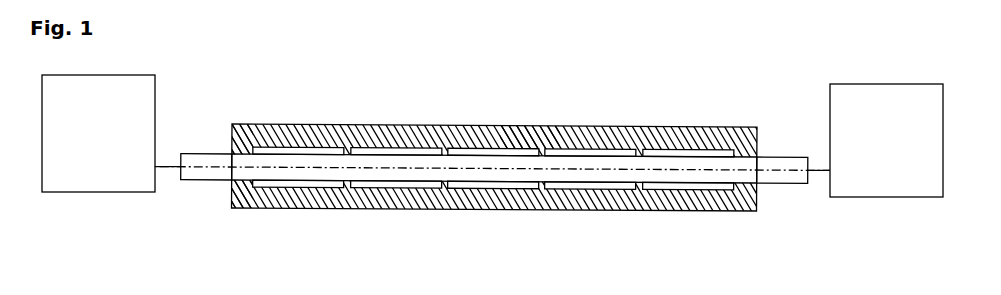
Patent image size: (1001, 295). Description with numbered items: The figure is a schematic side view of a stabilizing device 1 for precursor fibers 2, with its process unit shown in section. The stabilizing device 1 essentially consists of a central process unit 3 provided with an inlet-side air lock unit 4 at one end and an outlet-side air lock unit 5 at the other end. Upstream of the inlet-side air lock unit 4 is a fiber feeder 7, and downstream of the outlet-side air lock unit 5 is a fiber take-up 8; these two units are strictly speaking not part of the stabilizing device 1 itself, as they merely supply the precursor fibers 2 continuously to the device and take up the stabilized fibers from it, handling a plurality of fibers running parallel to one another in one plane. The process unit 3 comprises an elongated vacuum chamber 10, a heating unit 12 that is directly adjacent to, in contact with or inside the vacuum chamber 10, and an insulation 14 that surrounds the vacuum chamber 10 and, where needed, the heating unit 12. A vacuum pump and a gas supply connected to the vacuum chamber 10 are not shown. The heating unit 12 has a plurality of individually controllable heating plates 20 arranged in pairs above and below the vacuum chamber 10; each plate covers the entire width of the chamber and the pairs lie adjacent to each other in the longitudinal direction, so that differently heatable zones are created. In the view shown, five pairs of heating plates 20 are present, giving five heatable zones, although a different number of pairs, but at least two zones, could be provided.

The stabilizing device 1 is at (777, 60).
The precursor fibers 2 is at (815, 166).
The process unit 3 is at (713, 214).
The inlet-side air lock unit 4 is at (194, 182).
The outlet-side air lock unit 5 is at (788, 187).
The fiber feeder 7 is at (101, 195).
The fiber take-up 8 is at (899, 201).
The vacuum chamber 10 is at (244, 185).
The heating unit 12 is at (248, 147).
The insulation 14 is at (541, 140).
The heating plates 20 is at (582, 187).